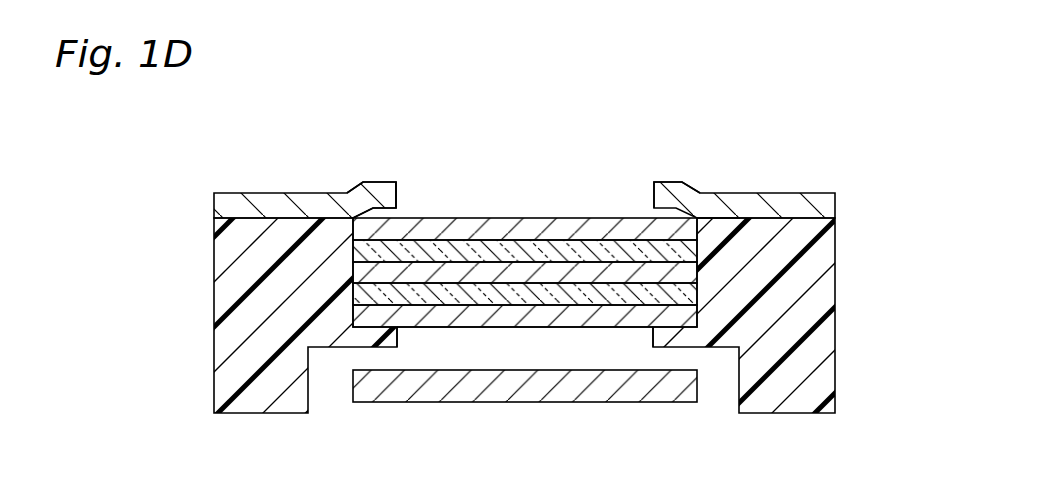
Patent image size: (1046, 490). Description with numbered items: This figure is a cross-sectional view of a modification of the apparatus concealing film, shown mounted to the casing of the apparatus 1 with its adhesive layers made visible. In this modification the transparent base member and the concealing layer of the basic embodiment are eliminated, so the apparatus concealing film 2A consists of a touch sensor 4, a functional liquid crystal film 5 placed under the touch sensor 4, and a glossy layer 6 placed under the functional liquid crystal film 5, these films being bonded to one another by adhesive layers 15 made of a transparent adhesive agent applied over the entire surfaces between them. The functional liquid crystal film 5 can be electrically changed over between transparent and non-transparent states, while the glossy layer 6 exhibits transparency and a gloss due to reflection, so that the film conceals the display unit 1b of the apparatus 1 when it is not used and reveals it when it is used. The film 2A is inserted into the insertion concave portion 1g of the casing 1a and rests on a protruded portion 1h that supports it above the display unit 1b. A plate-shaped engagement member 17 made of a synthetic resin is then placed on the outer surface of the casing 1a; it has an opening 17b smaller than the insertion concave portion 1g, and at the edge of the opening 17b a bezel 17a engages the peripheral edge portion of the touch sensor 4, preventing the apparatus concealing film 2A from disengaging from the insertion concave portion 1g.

The apparatus 1 is at (523, 309).
The casing 1a is at (233, 259).
The display unit 1b is at (597, 385).
The insertion concave portion 1g is at (717, 220).
The protruded portion 1h is at (385, 337).
The apparatus concealing film 2A is at (495, 336).
The touch sensor 4 is at (628, 230).
The functional liquid crystal film 5 is at (692, 272).
The glossy layer 6 is at (697, 315).
The adhesive layer 15 is at (550, 297).
The engagement member 17 is at (270, 184).
The bezel 17a is at (380, 197).
The opening 17b is at (413, 197).